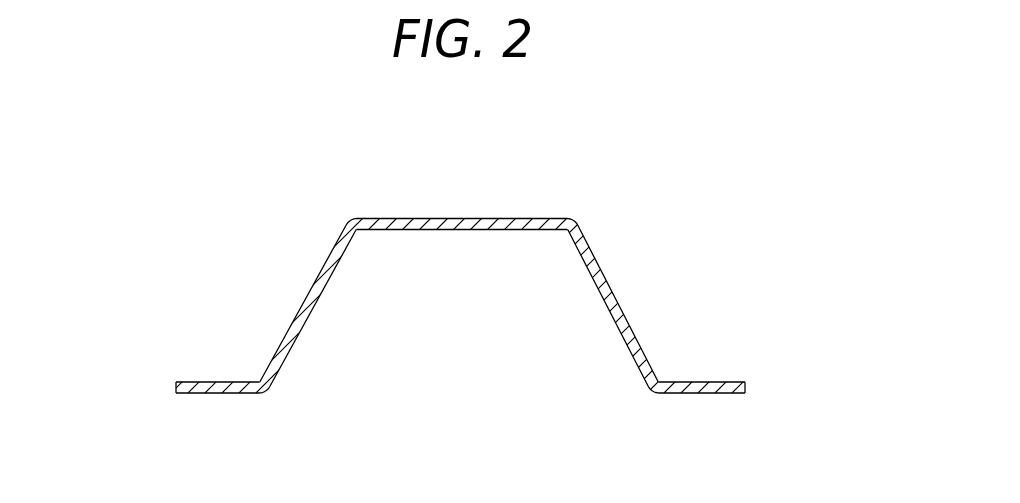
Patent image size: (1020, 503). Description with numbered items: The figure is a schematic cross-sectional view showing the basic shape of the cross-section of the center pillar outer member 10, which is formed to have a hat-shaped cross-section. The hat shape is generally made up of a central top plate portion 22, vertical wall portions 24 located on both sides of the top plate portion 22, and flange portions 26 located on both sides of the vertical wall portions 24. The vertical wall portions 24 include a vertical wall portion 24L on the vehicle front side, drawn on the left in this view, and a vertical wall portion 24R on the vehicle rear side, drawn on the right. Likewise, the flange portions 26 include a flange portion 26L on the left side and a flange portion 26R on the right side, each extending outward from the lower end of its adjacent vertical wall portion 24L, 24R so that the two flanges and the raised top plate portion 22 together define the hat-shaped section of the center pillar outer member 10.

The center pillar outer member 10 is at (315, 177).
The top plate portion 22 is at (473, 218).
The vertical wall portions 24 is at (461, 305).
The vertical wall portion 24L is at (304, 300).
The vertical wall portion 24R is at (617, 300).
The flange portions 26 is at (461, 363).
The flange portion 26L is at (225, 382).
The flange portion 26R is at (698, 382).